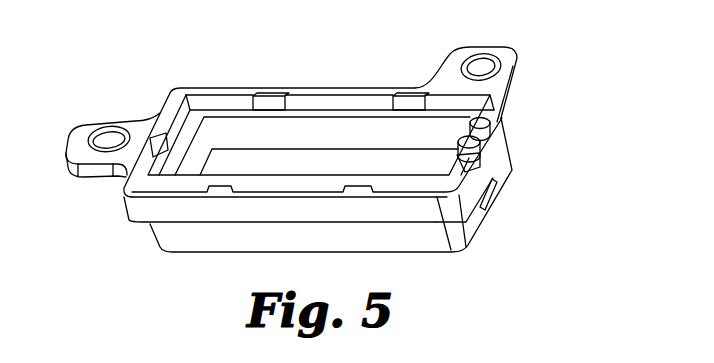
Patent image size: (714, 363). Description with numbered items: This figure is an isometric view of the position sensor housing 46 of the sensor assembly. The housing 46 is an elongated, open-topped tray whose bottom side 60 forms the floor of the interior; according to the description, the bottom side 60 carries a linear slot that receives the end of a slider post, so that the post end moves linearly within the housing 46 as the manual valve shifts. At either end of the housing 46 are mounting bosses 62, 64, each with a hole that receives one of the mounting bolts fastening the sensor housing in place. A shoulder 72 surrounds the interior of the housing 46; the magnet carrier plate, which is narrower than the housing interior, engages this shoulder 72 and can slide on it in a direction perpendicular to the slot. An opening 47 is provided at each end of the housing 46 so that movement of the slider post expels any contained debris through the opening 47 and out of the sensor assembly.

The position sensor housing 46 is at (223, 238).
The opening 47 is at (491, 200).
The bottom side 60 is at (217, 158).
The mounting boss 62 is at (103, 124).
The mounting boss 64 is at (510, 58).
The shoulder 72 is at (324, 103).